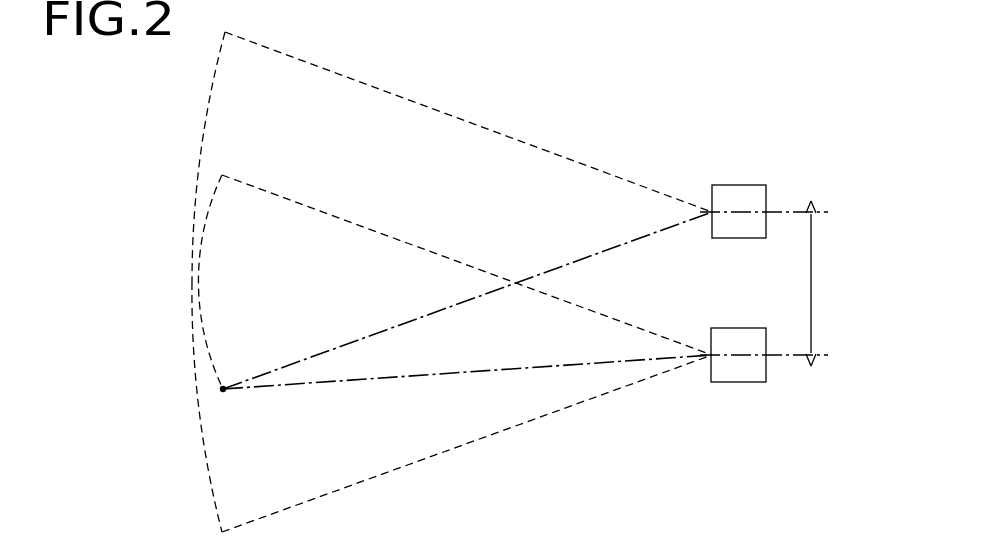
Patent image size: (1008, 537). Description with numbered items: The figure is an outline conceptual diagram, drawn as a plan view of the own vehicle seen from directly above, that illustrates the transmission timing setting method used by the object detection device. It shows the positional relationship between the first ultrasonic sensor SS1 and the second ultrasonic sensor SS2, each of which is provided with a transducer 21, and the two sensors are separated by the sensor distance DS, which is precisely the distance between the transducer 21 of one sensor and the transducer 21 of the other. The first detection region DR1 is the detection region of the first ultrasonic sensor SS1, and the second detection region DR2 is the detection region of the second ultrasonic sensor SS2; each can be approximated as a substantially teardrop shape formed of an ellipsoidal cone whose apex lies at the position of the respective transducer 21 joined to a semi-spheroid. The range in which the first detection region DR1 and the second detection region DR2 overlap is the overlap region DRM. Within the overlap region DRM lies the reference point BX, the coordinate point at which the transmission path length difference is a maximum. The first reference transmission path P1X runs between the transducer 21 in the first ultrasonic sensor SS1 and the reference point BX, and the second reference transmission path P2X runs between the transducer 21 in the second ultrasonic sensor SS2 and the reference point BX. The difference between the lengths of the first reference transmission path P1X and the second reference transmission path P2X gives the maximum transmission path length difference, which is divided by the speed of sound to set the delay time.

The transducer 21 is at (740, 192).
The first ultrasonic sensor SS1 is at (782, 176).
The second ultrasonic sensor SS2 is at (782, 391).
The sensor distance DS is at (831, 283).
The first detection region DR1 is at (203, 101).
The second detection region DR2 is at (195, 452).
The overlap region DRM is at (198, 283).
The reference point BX is at (221, 389).
The first reference transmission path P1X is at (467, 300).
The second reference transmission path P2X is at (467, 383).